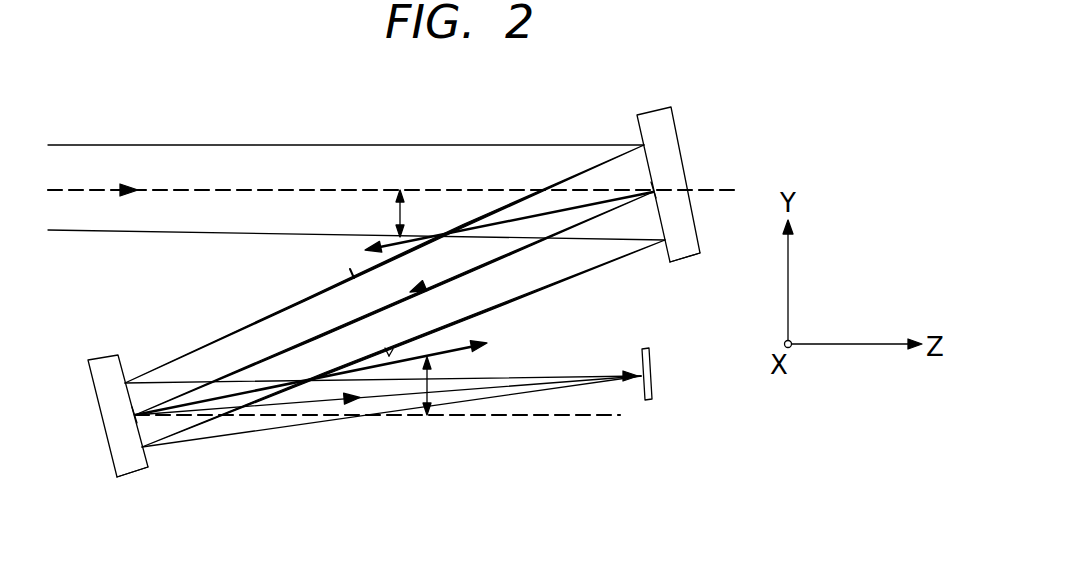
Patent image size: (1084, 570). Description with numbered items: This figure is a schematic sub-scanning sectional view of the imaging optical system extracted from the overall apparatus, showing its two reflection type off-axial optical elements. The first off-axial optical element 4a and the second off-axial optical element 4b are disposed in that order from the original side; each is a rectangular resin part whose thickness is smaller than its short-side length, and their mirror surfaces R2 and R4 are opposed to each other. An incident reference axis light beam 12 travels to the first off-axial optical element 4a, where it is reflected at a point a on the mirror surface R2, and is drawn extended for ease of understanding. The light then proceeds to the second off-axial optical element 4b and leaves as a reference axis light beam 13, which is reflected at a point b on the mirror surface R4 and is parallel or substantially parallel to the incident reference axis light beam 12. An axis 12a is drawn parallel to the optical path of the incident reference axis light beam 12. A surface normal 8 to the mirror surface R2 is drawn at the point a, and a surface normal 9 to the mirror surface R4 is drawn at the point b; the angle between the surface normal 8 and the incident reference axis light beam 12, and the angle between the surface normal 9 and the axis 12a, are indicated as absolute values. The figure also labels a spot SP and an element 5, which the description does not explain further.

The incident reference axis light beam 12 is at (292, 185).
The axis 12a is at (553, 418).
The first reflection type off-axial optical element 4a is at (660, 110).
The second reflection type off-axial optical element 4b is at (128, 480).
The point a is at (658, 188).
The point b is at (138, 418).
The mirror surface R2 is at (668, 258).
The mirror surface R4 is at (148, 458).
The surface normal 8 is at (522, 218).
The surface normal 9 is at (370, 367).
The beam spot (intermediate image, radius R3) SP is at (390, 357).
The reference axis light beam 13 is at (460, 390).
The light receiving surface / target element 5 is at (651, 385).